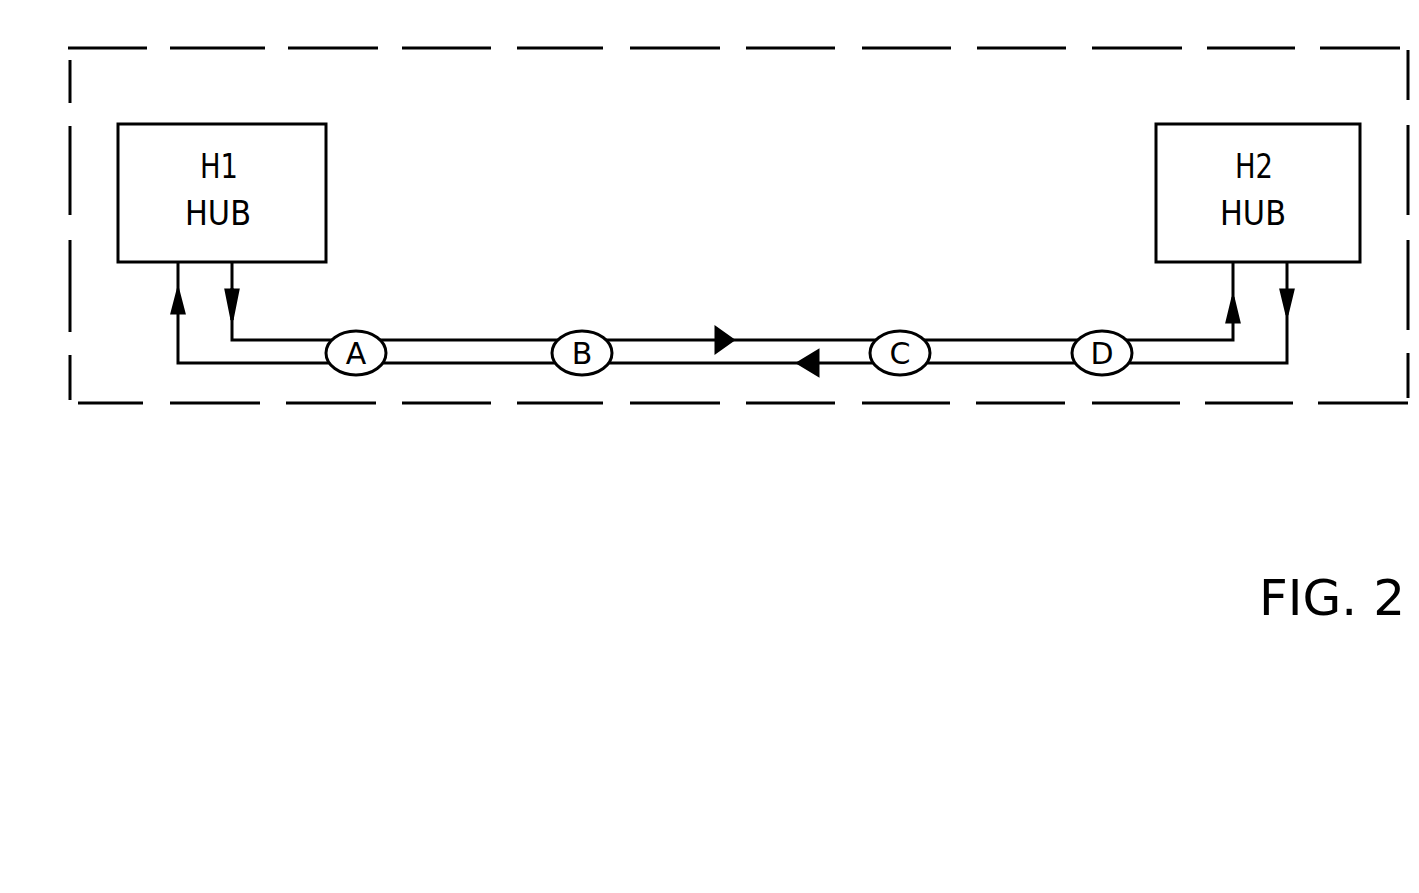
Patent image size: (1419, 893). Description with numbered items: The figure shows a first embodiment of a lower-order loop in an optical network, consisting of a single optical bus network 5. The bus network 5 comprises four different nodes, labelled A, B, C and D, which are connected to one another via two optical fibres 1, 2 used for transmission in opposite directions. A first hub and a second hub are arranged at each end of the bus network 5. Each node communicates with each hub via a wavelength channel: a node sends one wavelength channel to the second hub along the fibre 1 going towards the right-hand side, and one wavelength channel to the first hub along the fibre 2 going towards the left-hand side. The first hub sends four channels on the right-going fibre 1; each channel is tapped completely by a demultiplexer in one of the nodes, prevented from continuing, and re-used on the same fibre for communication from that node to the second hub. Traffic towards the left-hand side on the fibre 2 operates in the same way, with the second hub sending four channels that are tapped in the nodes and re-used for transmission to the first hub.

The optical fibre 1 is at (673, 340).
The optical fibre 2 is at (643, 363).
The bus network 5 is at (1257, 405).